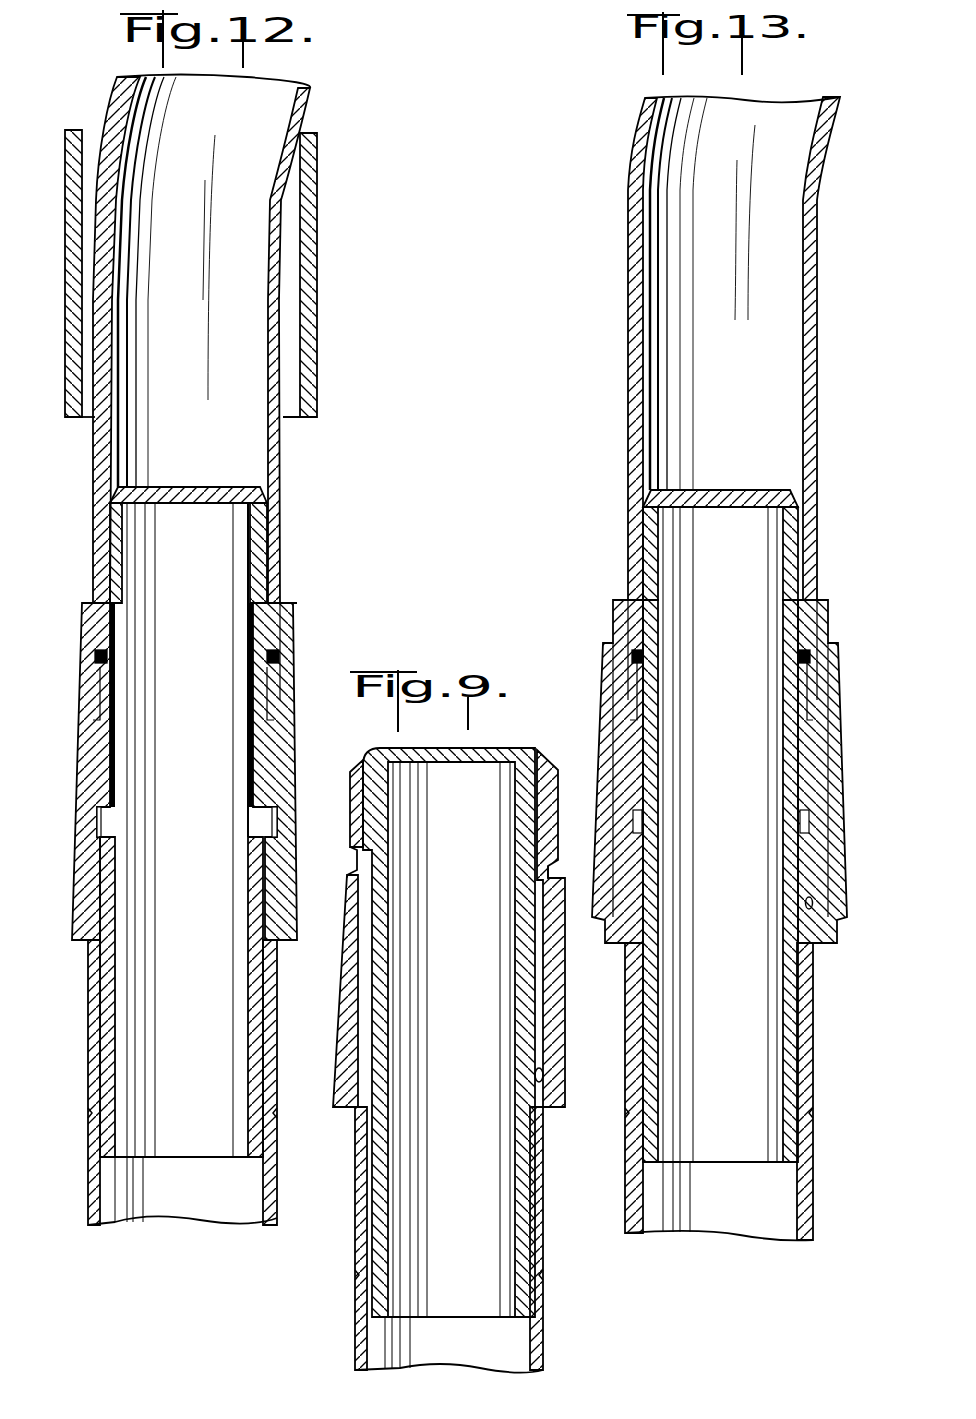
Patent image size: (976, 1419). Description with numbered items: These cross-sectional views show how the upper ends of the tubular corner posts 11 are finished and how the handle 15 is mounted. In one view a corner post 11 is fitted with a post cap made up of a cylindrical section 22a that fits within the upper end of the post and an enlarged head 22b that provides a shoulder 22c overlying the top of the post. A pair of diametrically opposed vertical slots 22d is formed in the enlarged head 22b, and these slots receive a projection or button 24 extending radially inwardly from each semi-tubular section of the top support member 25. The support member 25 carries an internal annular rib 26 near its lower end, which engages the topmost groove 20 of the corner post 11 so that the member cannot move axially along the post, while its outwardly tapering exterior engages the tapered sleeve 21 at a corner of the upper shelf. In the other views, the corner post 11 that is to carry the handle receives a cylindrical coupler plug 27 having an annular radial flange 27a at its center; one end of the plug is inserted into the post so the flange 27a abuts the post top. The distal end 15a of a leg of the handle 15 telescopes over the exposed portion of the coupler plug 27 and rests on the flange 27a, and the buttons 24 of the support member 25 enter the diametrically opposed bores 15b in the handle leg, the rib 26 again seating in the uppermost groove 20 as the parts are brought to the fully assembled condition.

In FIG. 12, the corner post 11 is at (90, 1046).
In FIG. 9, the corner post 11 is at (540, 1322).
In FIG. 13, the corner post 11 is at (813, 1178).
In FIG. 12, the handle 15 is at (308, 105).
In FIG. 13, the handle 15 is at (833, 128).
In FIG. 12, the distal end of handle leg 15a is at (283, 528).
In FIG. 13, the distal end of handle leg 15a is at (817, 442).
In FIG. 12, the bore 15b is at (95, 655).
In FIG. 13, the bore 15b is at (640, 658).
In FIG. 9, the groove 20 is at (540, 1060).
In FIG. 13, the groove 20 is at (813, 893).
In FIG. 12, the sleeve 21 is at (312, 337).
In FIG. 9, the cylindrical section 22a is at (365, 1145).
In FIG. 9, the enlarged head 22b is at (363, 812).
In FIG. 9, the shoulder 22c is at (540, 875).
In FIG. 9, the vertical slot 22d is at (342, 930).
In FIG. 12, the button 24 is at (80, 740).
In FIG. 9, the button 24 is at (555, 935).
In FIG. 13, the button 24 is at (797, 663).
In FIG. 12, the top support member 25 is at (330, 650).
In FIG. 9, the top support member 25 is at (342, 760).
In FIG. 13, the top support member 25 is at (887, 567).
In FIG. 9, the rib 26 is at (543, 1083).
In FIG. 13, the rib 26 is at (813, 918).
In FIG. 12, the coupler plug 27 is at (255, 900).
In FIG. 9, the coupler plug 27 is at (449, 1032).
In FIG. 13, the coupler plug 27 is at (783, 978).
In FIG. 12, the flange 27a is at (270, 820).
In FIG. 13, the flange 27a is at (792, 823).